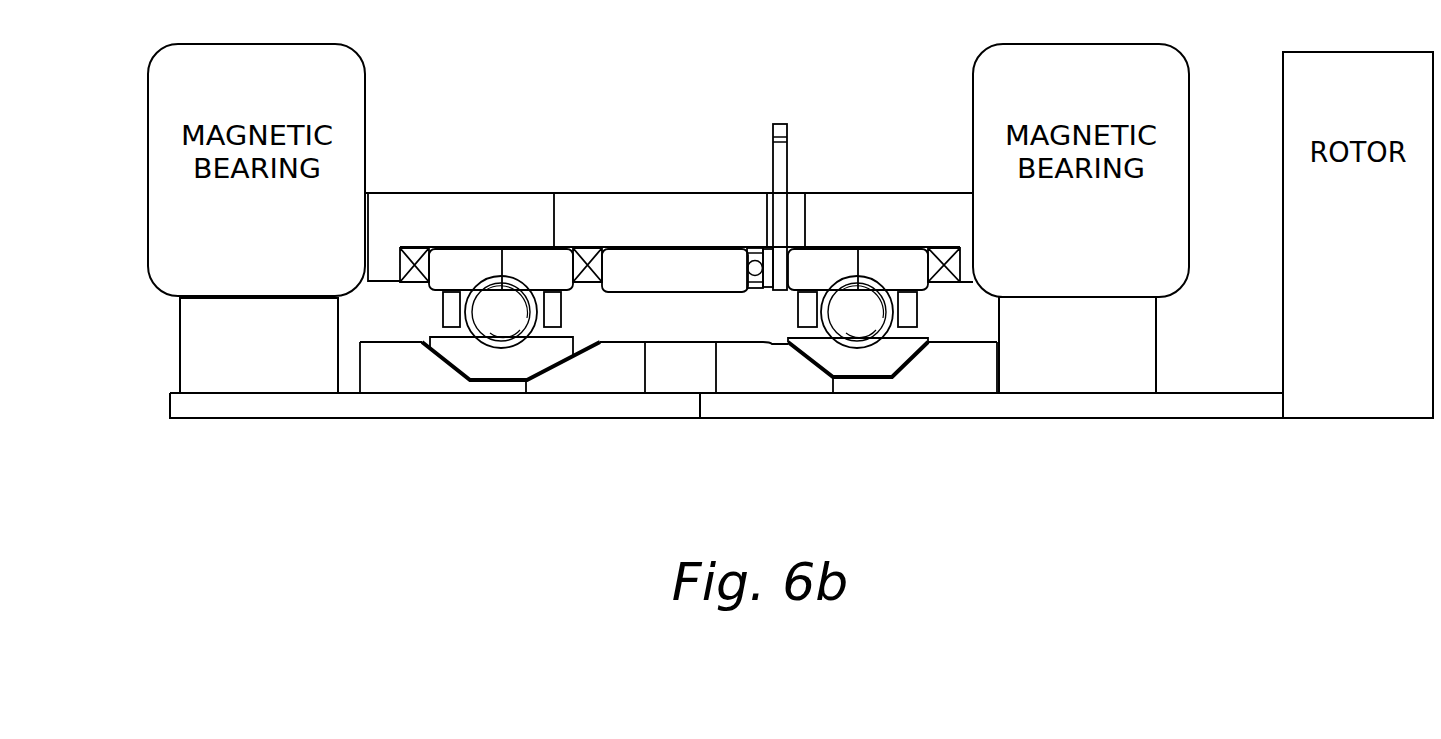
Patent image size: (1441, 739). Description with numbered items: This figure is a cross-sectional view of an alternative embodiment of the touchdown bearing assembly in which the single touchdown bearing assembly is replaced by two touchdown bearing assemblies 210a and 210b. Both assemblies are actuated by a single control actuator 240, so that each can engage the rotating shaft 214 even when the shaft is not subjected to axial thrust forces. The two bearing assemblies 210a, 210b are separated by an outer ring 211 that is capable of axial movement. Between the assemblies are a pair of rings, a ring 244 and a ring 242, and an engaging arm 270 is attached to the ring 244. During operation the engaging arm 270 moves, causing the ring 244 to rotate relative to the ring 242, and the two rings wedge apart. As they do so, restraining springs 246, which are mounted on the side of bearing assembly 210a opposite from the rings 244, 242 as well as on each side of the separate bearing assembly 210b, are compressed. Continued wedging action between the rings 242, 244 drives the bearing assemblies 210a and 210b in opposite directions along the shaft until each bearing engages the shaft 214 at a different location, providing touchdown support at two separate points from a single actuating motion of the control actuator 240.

The touchdown bearing assembly 210a is at (488, 165).
The touchdown bearing assembly 210b is at (845, 165).
The outer ring 211 is at (650, 265).
The rotating shaft 214 is at (950, 403).
The control actuator 240 is at (732, 172).
The ring 242 is at (757, 290).
The ring 244 is at (780, 290).
The restraining springs 246 is at (415, 248).
The engaging arm 270 is at (788, 150).